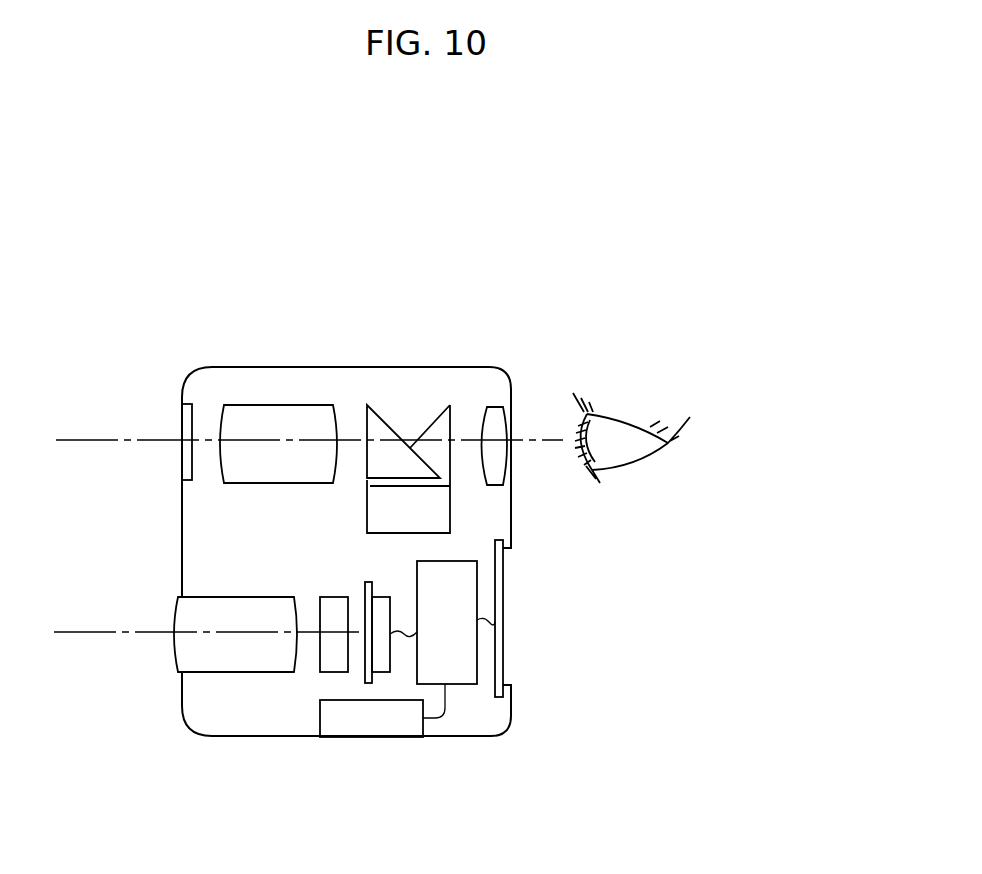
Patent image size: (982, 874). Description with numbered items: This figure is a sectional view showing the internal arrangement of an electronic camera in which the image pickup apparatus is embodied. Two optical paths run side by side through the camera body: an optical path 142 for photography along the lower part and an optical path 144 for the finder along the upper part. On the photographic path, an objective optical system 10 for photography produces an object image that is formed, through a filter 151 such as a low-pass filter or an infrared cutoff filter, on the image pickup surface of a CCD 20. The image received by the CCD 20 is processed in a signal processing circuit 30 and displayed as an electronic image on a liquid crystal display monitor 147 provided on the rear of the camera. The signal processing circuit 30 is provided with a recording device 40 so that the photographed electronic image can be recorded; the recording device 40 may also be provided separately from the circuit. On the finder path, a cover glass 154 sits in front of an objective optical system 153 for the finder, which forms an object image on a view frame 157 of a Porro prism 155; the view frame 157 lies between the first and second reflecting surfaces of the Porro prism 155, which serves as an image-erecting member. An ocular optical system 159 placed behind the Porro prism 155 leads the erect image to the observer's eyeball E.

The objective optical system for photography 10 is at (192, 648).
The CCD 20 is at (365, 603).
The signal processing circuit 30 is at (467, 579).
The recording device 40 is at (387, 733).
The optical path for photography 142 is at (95, 633).
The optical path for the finder 144 is at (100, 442).
The liquid crystal display monitor 147 is at (503, 598).
The filter 151 is at (327, 657).
The objective optical system for the finder 153 is at (287, 410).
The cover glass 154 is at (185, 415).
The Porro prism 155 is at (430, 430).
The view frame 157 is at (397, 495).
The ocular optical system 159 is at (498, 425).
The observer's eyeball E is at (628, 446).